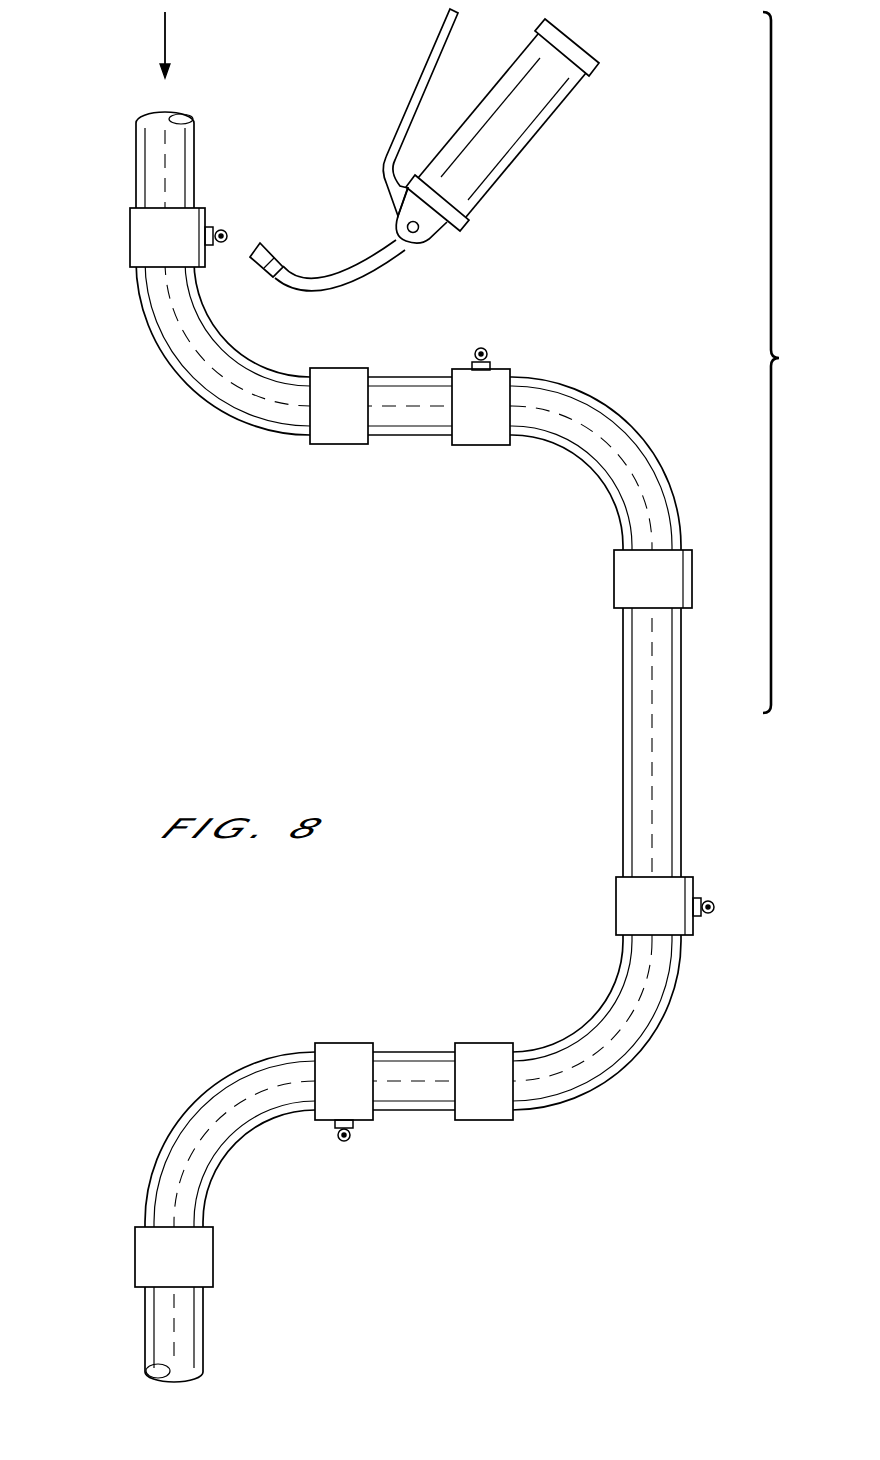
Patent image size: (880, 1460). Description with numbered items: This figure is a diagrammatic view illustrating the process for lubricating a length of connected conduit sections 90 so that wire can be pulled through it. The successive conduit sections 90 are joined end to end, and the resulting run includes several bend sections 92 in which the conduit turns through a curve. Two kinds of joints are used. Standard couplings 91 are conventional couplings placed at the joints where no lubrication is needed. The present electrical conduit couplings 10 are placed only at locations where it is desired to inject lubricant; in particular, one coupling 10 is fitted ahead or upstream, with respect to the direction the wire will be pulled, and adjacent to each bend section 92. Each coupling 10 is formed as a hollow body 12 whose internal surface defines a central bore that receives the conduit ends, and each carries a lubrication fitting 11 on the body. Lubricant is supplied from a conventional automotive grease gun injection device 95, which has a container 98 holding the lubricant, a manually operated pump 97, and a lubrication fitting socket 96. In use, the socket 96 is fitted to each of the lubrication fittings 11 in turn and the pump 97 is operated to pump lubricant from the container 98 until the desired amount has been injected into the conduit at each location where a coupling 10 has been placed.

The electrical conduit coupling 10 is at (428, 677).
The lubrication fitting 11 is at (236, 222).
The hollow body 12 is at (148, 230).
The conduit sections 90 is at (148, 147).
The standard couplings 91 is at (332, 387).
The bend sections 92 is at (245, 396).
The grease gun injection device 95 is at (460, 150).
The lubrication fitting socket 96 is at (268, 250).
The manually operated pump 97 is at (428, 231).
The container 98 is at (497, 114).